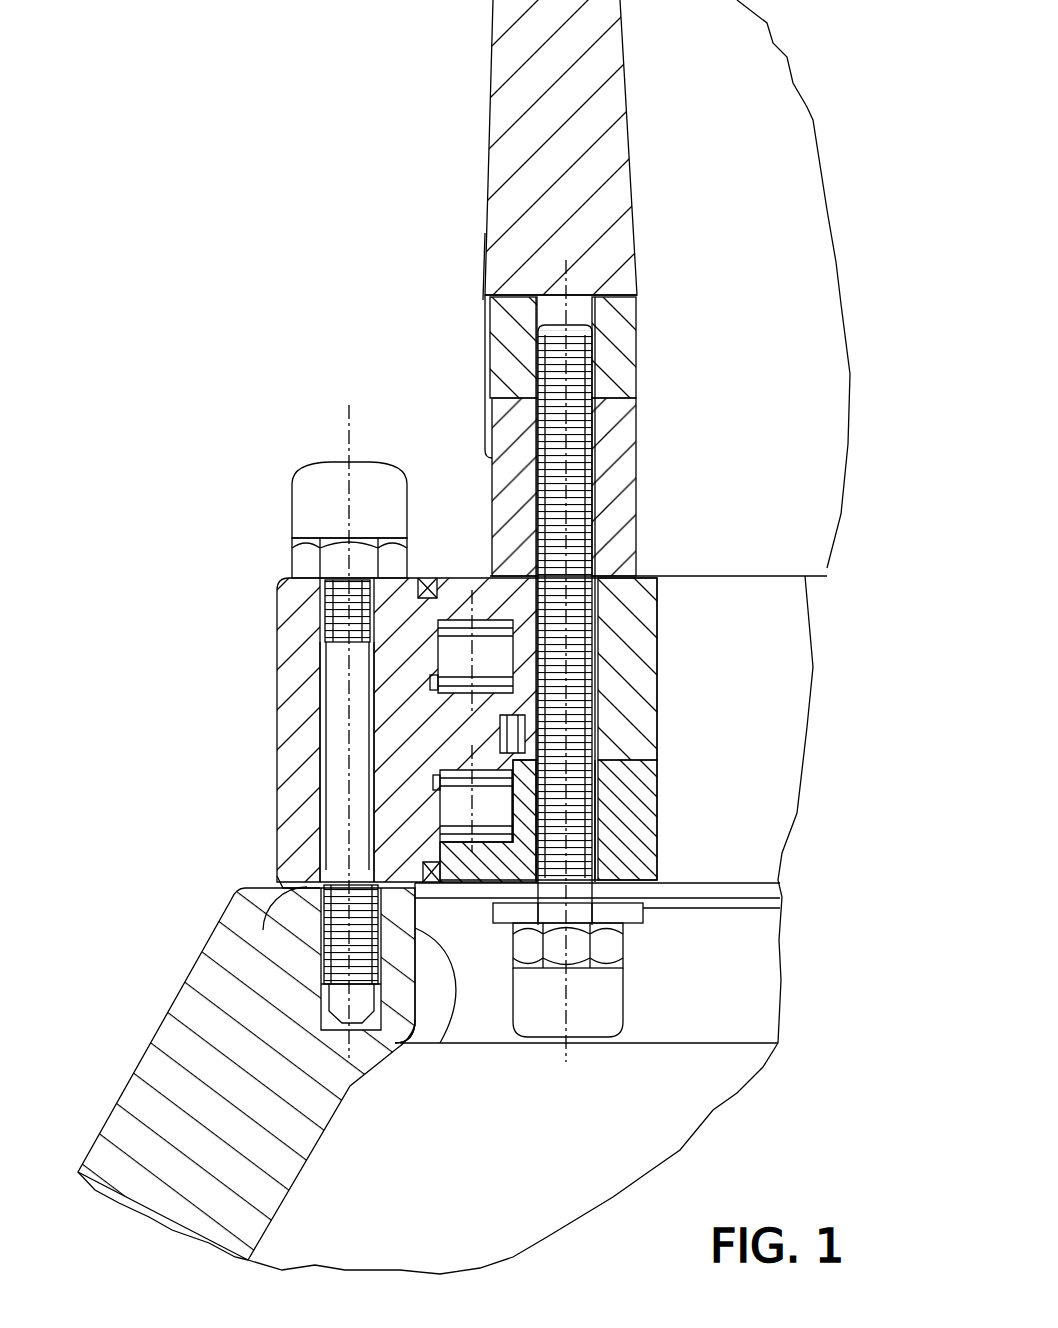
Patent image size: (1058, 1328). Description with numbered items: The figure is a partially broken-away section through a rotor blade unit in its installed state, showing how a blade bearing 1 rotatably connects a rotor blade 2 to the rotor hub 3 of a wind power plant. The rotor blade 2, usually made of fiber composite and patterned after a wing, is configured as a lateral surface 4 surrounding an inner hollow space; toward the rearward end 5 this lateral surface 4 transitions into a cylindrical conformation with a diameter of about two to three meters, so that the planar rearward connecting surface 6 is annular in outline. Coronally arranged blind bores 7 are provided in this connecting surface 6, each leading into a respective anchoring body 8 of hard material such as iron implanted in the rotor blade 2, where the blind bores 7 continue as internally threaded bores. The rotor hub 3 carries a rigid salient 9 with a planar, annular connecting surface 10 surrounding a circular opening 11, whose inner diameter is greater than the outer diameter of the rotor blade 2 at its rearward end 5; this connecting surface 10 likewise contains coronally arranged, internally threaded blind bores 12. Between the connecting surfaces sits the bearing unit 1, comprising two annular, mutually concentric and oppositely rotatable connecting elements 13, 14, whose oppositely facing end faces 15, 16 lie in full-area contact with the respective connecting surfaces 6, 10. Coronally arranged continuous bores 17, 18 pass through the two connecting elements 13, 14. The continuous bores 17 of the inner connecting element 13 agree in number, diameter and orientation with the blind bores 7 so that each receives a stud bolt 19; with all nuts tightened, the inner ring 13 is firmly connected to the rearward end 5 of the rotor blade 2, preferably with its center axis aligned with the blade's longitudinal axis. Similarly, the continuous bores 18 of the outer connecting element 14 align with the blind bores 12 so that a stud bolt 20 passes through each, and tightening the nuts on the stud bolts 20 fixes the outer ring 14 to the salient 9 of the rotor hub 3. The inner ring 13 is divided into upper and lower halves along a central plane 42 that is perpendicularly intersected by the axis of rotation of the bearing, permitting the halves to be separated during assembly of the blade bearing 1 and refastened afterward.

The blade bearing 1 is at (268, 638).
The rotor blade 2 is at (607, 112).
The rotor hub 3 is at (175, 1035).
The lateral surface 4 is at (600, 160).
The rearward end 5 is at (633, 478).
The connecting surface 6 is at (662, 615).
The blind bores 7 is at (633, 428).
The anchoring body 8 is at (617, 325).
The salient 9 is at (133, 1105).
The connecting surface 10 is at (293, 863).
The circular opening 11 is at (440, 1043).
The blind bores 12 is at (412, 1040).
The inner connecting element 13 is at (672, 699).
The outer connecting element 14 is at (293, 708).
The end face 15 is at (645, 570).
The end face 16 is at (252, 932).
The continuous bores 17 is at (605, 838).
The continuous bores 18 is at (317, 763).
The stud bolt 19 is at (553, 1027).
The stud bolt 20 is at (310, 518).
The central plane 42 is at (655, 782).